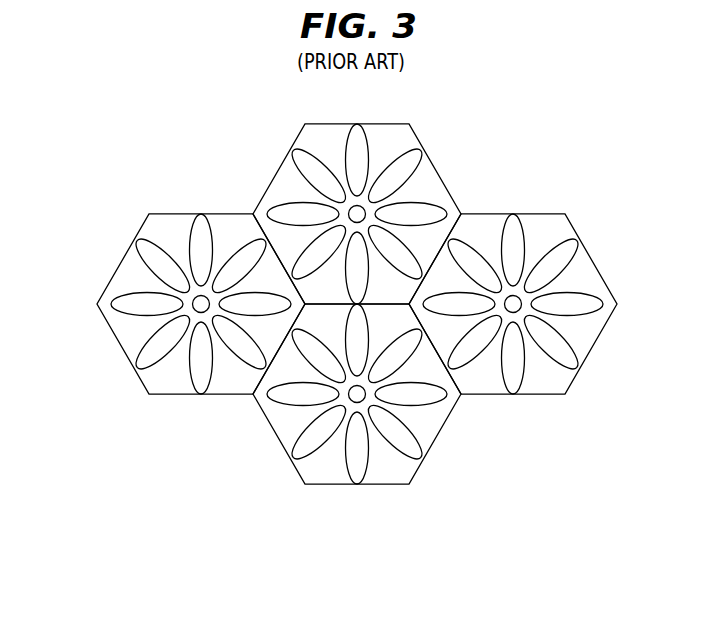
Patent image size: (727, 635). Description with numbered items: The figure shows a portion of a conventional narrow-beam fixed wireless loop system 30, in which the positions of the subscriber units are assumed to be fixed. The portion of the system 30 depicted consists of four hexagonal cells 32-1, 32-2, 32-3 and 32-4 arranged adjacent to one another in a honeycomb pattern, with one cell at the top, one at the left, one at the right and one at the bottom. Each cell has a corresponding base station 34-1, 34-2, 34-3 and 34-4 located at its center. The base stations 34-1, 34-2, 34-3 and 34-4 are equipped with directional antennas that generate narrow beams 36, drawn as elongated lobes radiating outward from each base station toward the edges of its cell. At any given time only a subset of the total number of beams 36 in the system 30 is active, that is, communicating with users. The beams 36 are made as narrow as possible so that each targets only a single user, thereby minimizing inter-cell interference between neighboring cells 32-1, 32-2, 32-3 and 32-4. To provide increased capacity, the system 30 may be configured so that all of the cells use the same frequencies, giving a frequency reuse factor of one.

The narrow-beam FWL system 30 is at (176, 135).
The hexagonal cell 32-1 is at (433, 162).
The hexagonal cell 32-2 is at (592, 260).
The hexagonal cell 32-3 is at (436, 440).
The hexagonal cell 32-4 is at (123, 263).
The base station 34-1 is at (418, 151).
The base station 34-2 is at (518, 311).
The base station 34-3 is at (351, 401).
The base station 34-4 is at (196, 312).
The narrow beams 36 is at (352, 126).